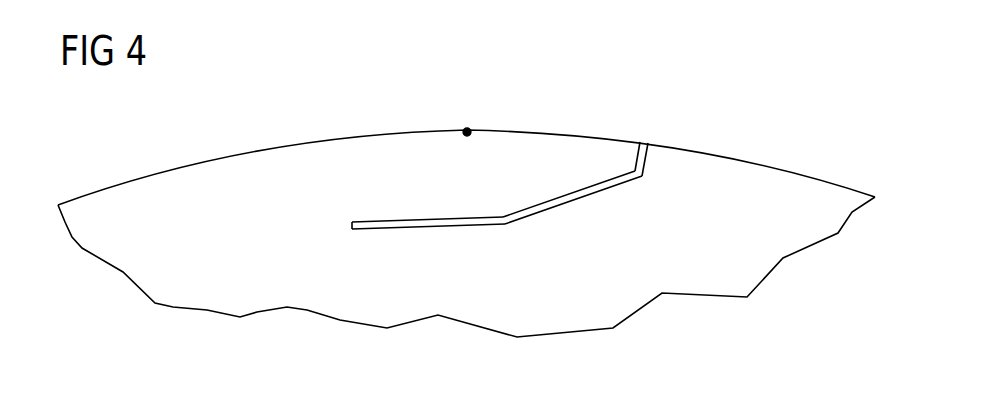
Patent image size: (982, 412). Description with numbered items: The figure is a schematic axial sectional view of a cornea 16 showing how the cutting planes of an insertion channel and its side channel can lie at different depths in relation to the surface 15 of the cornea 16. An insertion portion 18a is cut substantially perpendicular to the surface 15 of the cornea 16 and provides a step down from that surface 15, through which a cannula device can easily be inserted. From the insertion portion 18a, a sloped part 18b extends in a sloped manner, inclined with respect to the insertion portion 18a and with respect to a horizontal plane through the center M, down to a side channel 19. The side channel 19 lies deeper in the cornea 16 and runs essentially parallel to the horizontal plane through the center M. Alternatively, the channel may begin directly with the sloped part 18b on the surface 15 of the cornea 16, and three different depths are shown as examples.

The surface of the cornea 15 is at (722, 156).
The cornea 16 is at (283, 140).
The center M is at (466, 128).
The insertion portion 18a is at (650, 158).
The sloped part 18b is at (568, 202).
The side channel 19 is at (418, 230).